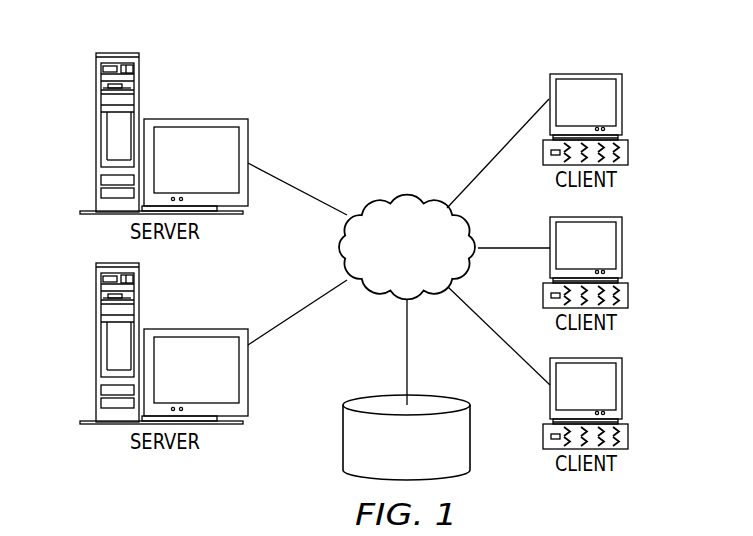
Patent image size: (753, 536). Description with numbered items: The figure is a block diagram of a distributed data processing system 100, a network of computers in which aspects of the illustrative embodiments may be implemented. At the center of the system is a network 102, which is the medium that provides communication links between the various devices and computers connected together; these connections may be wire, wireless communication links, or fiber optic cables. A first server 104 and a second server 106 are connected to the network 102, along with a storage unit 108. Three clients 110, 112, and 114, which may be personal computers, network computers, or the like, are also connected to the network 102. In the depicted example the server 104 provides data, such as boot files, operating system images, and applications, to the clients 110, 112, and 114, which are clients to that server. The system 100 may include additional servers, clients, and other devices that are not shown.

The distributed data processing system 100 is at (458, 65).
The network 102 is at (378, 197).
The server 104 is at (97, 137).
The server 106 is at (97, 347).
The storage unit 108 is at (343, 438).
The client 110 is at (622, 103).
The client 112 is at (622, 247).
The client 114 is at (622, 387).